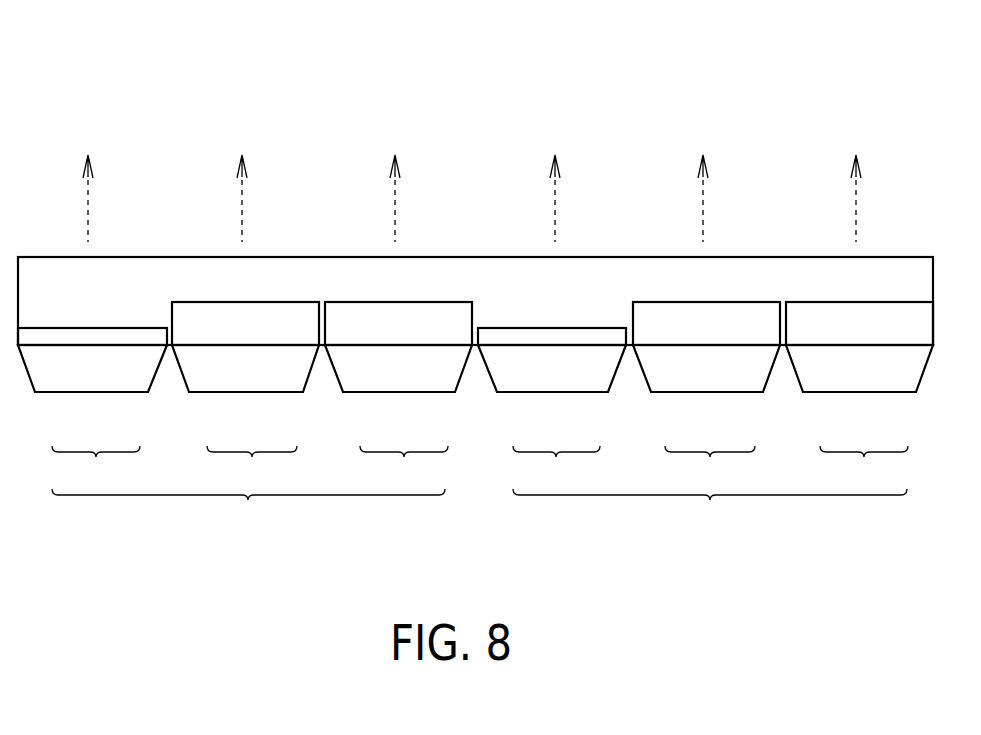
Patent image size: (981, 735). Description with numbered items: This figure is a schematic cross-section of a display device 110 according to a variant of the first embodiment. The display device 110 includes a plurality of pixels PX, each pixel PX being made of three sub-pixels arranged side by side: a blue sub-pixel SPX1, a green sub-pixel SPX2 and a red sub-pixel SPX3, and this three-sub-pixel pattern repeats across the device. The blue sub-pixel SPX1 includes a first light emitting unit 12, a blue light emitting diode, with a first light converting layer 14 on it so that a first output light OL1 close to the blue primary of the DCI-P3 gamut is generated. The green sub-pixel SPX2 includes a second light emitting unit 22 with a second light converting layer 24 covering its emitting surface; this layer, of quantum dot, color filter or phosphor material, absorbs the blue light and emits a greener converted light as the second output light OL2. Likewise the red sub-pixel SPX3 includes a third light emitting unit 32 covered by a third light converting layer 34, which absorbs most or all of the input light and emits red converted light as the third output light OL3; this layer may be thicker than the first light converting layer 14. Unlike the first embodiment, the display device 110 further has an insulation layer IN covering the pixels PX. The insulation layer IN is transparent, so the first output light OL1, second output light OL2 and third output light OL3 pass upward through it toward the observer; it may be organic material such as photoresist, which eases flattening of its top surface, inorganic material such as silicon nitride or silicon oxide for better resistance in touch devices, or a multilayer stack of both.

The display device 110 is at (778, 80).
The insulation layer IN is at (478, 268).
The first light emitting unit 12 is at (68, 375).
The first light converting layer 14 is at (118, 352).
The second light emitting unit 22 is at (221, 375).
The second light converting layer 24 is at (272, 352).
The third light emitting unit 32 is at (375, 375).
The third light converting layer 34 is at (427, 352).
The blue sub-pixel SPX1 is at (326, 467).
The green sub-pixel SPX2 is at (481, 467).
The red sub-pixel SPX3 is at (634, 467).
The pixel PX is at (479, 511).
The first output light OL1 is at (321, 182).
The second output light OL2 is at (472, 182).
The third output light OL3 is at (625, 182).